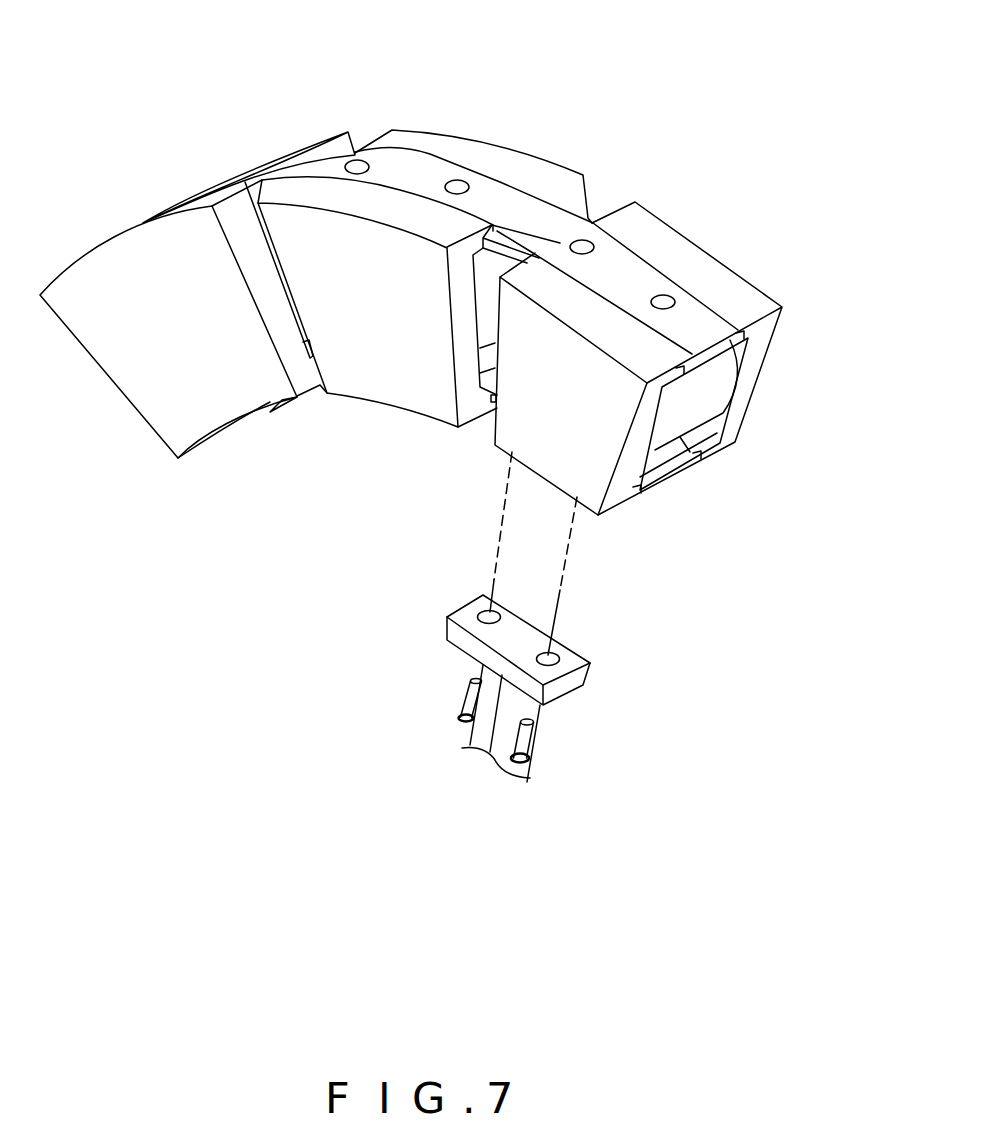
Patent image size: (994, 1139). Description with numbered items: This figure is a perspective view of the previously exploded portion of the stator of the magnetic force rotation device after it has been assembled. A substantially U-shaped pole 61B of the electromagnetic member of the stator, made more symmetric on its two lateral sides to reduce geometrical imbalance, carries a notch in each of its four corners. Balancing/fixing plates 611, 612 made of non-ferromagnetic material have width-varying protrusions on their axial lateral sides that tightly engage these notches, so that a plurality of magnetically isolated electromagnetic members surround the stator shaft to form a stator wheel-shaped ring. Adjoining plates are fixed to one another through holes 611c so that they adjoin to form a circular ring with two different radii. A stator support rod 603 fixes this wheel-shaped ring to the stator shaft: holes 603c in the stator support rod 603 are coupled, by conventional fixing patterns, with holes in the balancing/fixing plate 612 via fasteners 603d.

The hole 611c is at (457, 180).
The balancing/fixing plate 611 is at (543, 228).
The U-shaped pole 61B is at (693, 268).
The balancing/fixing plate 612 is at (672, 477).
The hole 603c is at (578, 652).
The fastener 603d is at (527, 748).
The stator support rod 603 is at (470, 746).